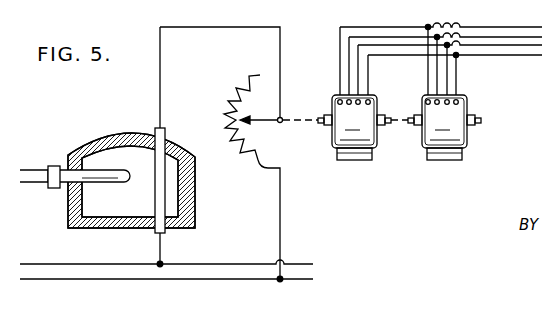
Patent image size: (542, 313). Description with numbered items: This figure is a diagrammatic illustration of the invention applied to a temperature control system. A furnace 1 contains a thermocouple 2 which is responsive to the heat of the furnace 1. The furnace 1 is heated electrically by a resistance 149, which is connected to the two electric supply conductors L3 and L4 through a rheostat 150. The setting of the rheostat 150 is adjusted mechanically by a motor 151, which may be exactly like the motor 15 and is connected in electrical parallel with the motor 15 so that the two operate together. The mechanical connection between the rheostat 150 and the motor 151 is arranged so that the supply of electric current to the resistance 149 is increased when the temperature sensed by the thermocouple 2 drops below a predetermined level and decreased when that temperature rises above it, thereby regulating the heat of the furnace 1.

The furnace 1 is at (112, 142).
The thermocouple 2 is at (117, 179).
The resistance 149 is at (162, 138).
The rheostat 150 is at (240, 86).
The motor 151 is at (338, 131).
The motor 15 is at (455, 128).
The electric supply conductor L3 is at (241, 264).
The electric supply conductor L4 is at (241, 280).